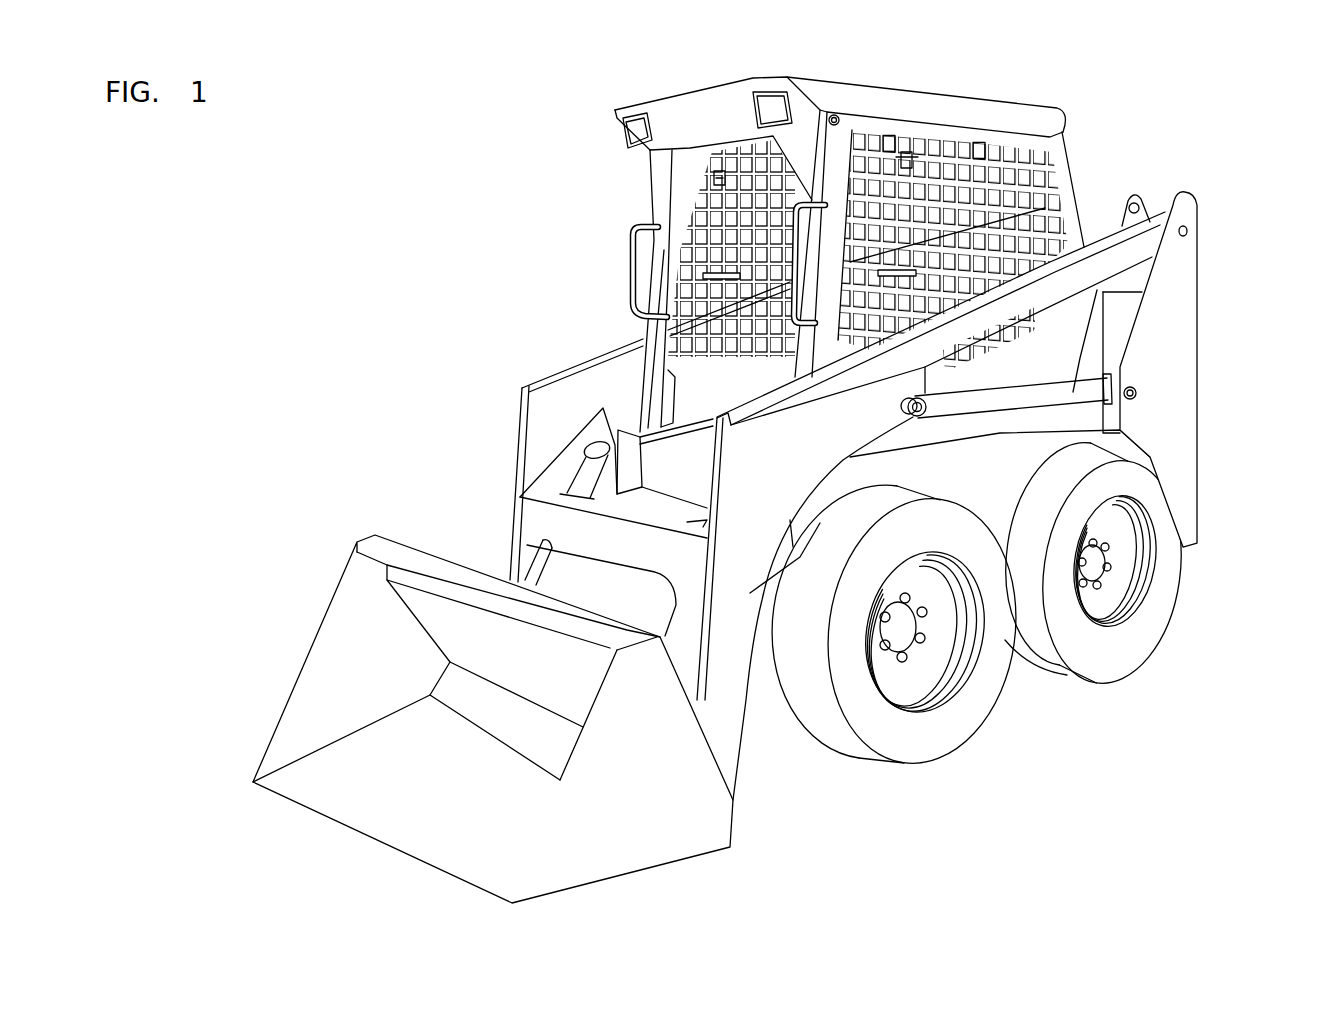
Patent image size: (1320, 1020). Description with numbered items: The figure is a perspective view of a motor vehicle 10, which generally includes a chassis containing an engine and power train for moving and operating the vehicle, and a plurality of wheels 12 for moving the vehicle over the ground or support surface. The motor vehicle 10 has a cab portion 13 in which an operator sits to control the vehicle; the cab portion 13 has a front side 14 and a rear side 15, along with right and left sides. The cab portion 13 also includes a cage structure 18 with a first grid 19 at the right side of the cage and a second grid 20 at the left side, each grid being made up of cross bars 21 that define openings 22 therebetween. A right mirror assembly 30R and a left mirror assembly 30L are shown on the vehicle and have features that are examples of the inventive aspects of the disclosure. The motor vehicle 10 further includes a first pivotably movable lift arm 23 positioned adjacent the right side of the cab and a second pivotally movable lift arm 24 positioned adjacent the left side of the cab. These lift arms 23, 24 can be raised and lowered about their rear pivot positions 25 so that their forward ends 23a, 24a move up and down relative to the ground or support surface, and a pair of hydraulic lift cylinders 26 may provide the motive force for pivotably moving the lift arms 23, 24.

The motor vehicle 10 is at (1100, 152).
The wheels 12 is at (983, 609).
The cab portion 13 is at (793, 78).
The front side 14 is at (680, 322).
The rear side 15 is at (1087, 191).
The cage structure 18 is at (1008, 177).
The first grid 19 is at (1027, 163).
The second grid 20 is at (690, 218).
The cross bars 21 is at (977, 153).
The openings 22 is at (878, 138).
The first pivotably movable lift arm 23 is at (1105, 255).
The forward end of the first lift arm 23a is at (727, 710).
The second pivotally movable lift arm 24 is at (595, 378).
The forward end of the second lift arm 24a is at (530, 530).
The rear pivot positions 25 is at (1189, 231).
The hydraulic lift cylinders 26 is at (1057, 392).
The right mirror assembly 30R is at (718, 180).
The left mirror assembly 30L is at (905, 165).